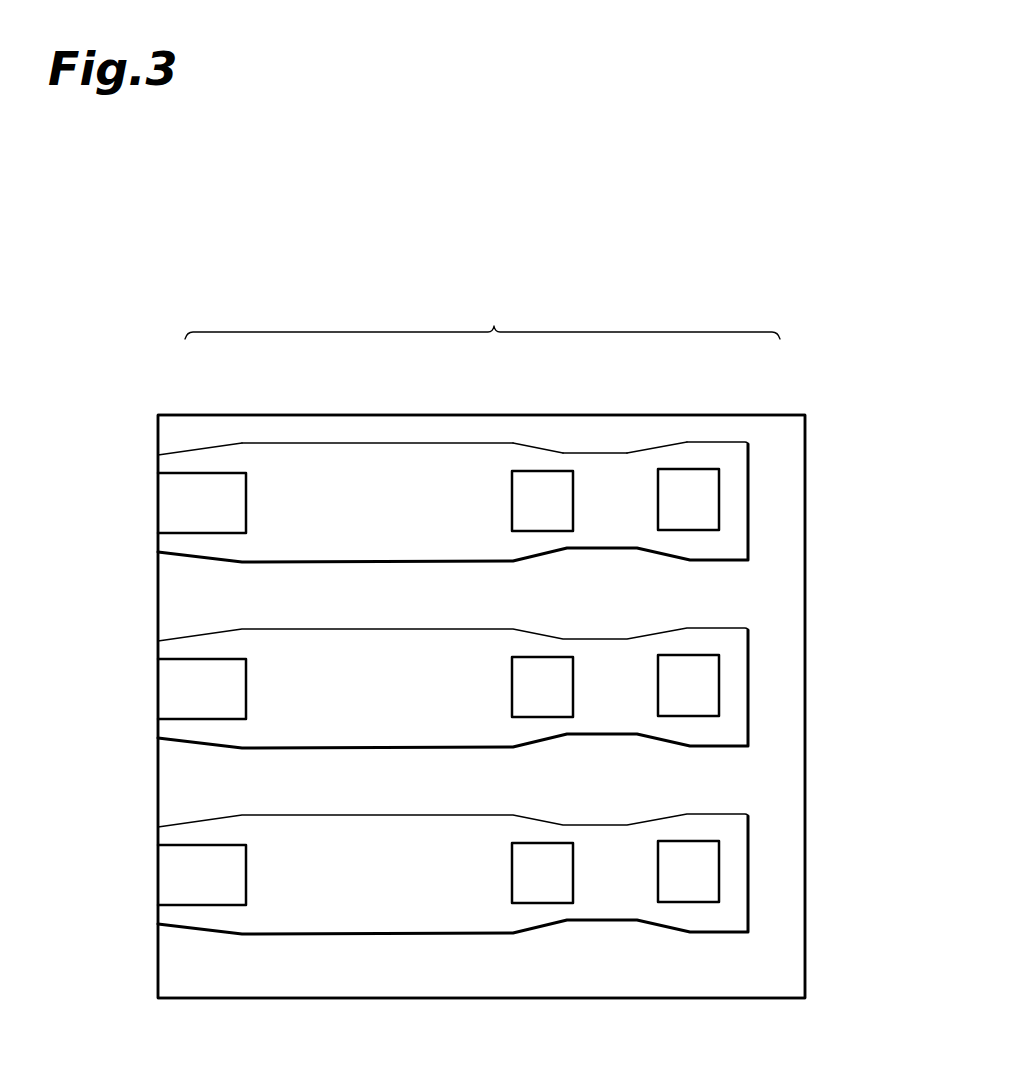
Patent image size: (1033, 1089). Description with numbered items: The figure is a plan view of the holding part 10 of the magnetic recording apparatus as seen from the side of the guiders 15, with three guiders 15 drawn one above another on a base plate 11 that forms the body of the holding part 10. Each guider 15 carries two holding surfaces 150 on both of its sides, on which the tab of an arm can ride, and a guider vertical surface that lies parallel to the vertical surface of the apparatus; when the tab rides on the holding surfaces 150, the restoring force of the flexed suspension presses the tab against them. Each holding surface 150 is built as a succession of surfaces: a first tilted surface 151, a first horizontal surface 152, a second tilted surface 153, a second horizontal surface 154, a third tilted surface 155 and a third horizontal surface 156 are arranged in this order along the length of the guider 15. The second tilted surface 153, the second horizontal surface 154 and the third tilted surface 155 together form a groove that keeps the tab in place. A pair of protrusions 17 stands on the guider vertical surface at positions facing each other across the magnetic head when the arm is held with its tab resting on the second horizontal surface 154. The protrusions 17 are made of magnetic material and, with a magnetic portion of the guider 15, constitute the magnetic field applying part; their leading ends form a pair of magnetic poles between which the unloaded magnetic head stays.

The holding part 10 is at (691, 294).
The substrate 11 is at (770, 592).
The guider 15 is at (288, 513).
The protrusion 17 is at (542, 883).
The holding surface 150 is at (482, 315).
The first tilted surface 151 is at (203, 447).
The first horizontal surface 152 is at (372, 443).
The second tilted surface 153 is at (538, 448).
The second horizontal surface 154 is at (607, 450).
The third tilted surface 155 is at (665, 443).
The third horizontal surface 156 is at (727, 443).